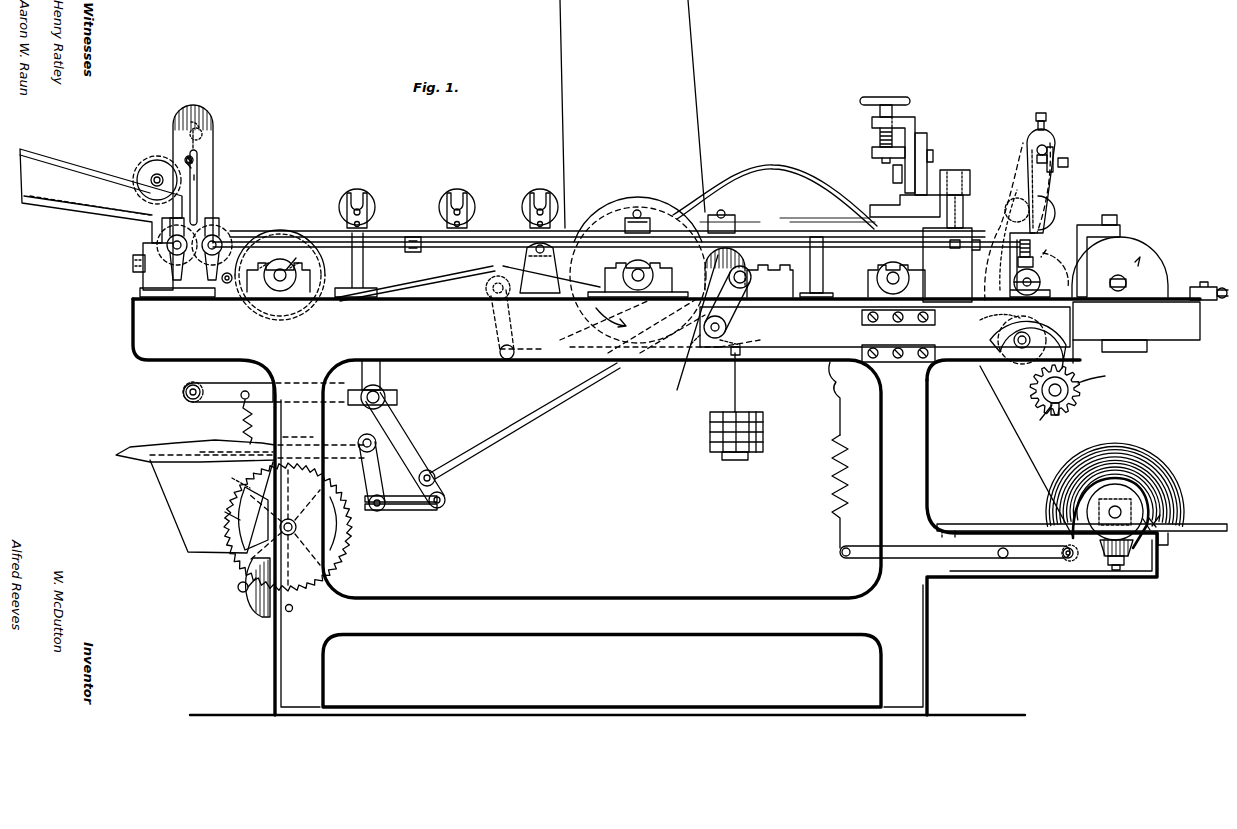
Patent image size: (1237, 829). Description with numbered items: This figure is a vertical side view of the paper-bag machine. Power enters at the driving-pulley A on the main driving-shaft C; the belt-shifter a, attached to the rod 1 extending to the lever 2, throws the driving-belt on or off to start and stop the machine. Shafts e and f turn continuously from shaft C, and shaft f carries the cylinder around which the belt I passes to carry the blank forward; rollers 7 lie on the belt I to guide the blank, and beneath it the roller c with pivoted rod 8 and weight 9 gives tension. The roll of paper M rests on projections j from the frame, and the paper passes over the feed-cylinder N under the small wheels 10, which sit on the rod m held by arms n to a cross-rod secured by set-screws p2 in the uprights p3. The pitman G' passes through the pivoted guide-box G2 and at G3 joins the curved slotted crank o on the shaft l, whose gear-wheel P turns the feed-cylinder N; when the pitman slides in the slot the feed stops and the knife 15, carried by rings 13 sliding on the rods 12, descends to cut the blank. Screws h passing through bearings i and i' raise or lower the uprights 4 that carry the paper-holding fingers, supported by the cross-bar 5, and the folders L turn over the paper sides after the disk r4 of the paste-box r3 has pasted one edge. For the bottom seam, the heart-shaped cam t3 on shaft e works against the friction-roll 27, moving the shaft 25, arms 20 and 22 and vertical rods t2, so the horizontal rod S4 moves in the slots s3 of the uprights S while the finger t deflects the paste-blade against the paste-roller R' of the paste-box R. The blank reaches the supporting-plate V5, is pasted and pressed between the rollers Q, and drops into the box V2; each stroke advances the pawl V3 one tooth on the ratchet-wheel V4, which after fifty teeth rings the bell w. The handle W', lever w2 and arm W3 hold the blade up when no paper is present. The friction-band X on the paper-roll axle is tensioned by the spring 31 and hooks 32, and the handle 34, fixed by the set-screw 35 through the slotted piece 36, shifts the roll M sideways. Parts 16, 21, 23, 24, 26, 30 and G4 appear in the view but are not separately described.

The paste-box R is at (101, 196).
The knife 15 is at (84, 202).
The paste-roller R' is at (157, 180).
The belt-shifter a is at (143, 252).
The upright S is at (214, 115).
The slot s3 is at (196, 112).
The horizontal rod S4 is at (213, 132).
The finger t is at (198, 160).
The slotted piece 36 is at (188, 172).
The rollers Q is at (222, 235).
The belt I is at (300, 224).
The bearing i' is at (307, 263).
The lever 2 is at (450, 242).
The rollers 7 is at (547, 194).
The rod 1 is at (520, 256).
The roller c is at (497, 316).
The pivoted rod 8 is at (630, 327).
The driving-pulley A is at (610, 214).
The folders L is at (775, 197).
The main driving-shaft C is at (640, 272).
The heart-shaped cam t3 is at (742, 252).
The shaft e is at (720, 305).
The bearing 26 is at (770, 268).
The post 30 is at (826, 245).
The shaft f is at (899, 270).
The screws h is at (884, 95).
The bearings i is at (883, 154).
The cross-bar 5 is at (928, 137).
The uprights 4 is at (905, 191).
The rings 13 is at (970, 178).
The uprights or rods 12 is at (963, 212).
The arms n is at (1047, 178).
The set-screws p2 is at (1047, 115).
The pin 16 is at (1050, 146).
The uprights p3 is at (1018, 172).
The rod m is at (1012, 206).
The friction-rollers 10 is at (1056, 206).
The feed-cylinder N is at (1047, 240).
The disk r4 is at (1120, 256).
The paste-box r3 is at (1150, 317).
The pitman G' is at (885, 327).
The pivoted guide-box G2 is at (898, 344).
The connection point G3 is at (1020, 344).
The rocker arm G4 is at (1022, 313).
The gear-wheel P is at (1080, 397).
The curved slotted crank o is at (1097, 374).
The shaft l is at (1042, 419).
The weight 9 is at (736, 403).
The friction-roll 27 is at (689, 329).
The hooks 32 is at (847, 398).
The spring 31 is at (831, 482).
The projections j is at (1078, 558).
The roll of paper M is at (1130, 445).
The friction-band X is at (1131, 525).
The handle 34 is at (1205, 524).
The set-screw 35 is at (1160, 516).
The shaft 25 is at (540, 412).
The arm 20 is at (265, 385).
The vertical rods t2 is at (186, 386).
The spring 24 is at (261, 412).
The handle W' is at (240, 441).
The box V2 is at (206, 506).
The ratchet-wheel V4 is at (357, 537).
The pawl V3 is at (231, 477).
The supporting-plate V5 is at (222, 512).
The bell w is at (252, 598).
The post 23 is at (380, 374).
The pivot 21 is at (386, 394).
The arm 22 is at (410, 432).
The lever w2 is at (374, 472).
The arm W3 is at (416, 508).